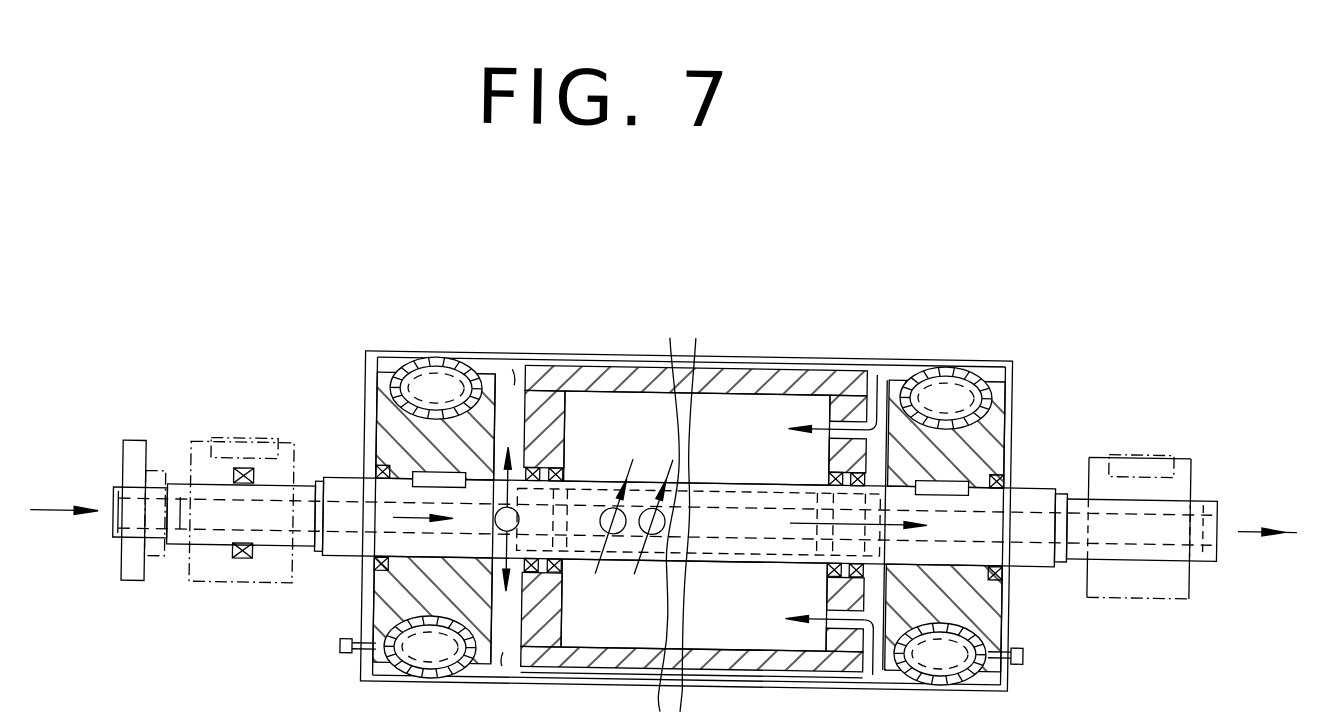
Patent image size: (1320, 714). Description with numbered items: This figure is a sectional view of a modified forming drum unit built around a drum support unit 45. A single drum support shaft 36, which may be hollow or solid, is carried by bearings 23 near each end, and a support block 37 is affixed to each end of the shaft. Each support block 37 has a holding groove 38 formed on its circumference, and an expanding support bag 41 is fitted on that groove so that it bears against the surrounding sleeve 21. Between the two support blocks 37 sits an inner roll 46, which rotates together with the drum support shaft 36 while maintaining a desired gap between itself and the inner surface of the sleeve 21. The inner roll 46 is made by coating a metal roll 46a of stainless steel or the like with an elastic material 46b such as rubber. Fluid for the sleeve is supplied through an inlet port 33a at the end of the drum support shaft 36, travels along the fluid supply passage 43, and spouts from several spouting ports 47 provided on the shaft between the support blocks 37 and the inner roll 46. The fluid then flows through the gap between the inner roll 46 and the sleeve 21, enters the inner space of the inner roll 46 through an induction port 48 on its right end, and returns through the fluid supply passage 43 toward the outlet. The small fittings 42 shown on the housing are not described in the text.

The sleeve 21 is at (755, 356).
The bearings 23 is at (245, 447).
The inlet port 33a is at (112, 524).
The drum support shaft 36 is at (265, 555).
The support block 37 is at (494, 375).
The holding groove 38 is at (450, 364).
The expanding support bag 41 is at (415, 364).
The fitting 42 is at (348, 660).
The fluid supply passage 43 is at (353, 525).
The drum support unit 45 is at (486, 237).
The inner roll 46 is at (621, 367).
The metal roll 46a is at (775, 395).
The elastic material 46b is at (724, 364).
The spouting ports 47 is at (522, 523).
The induction port 48 is at (843, 407).